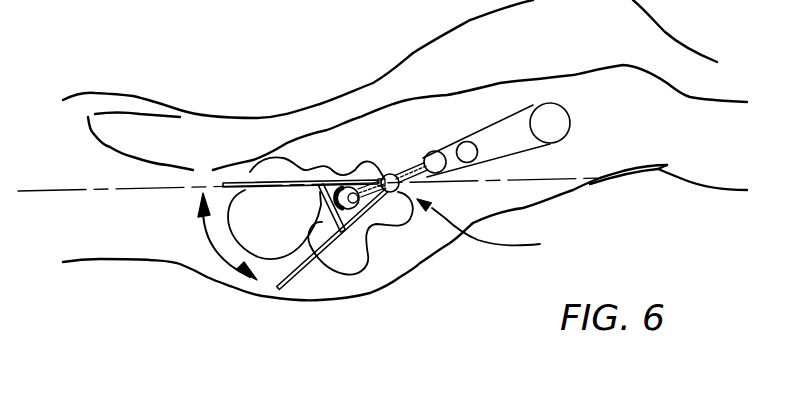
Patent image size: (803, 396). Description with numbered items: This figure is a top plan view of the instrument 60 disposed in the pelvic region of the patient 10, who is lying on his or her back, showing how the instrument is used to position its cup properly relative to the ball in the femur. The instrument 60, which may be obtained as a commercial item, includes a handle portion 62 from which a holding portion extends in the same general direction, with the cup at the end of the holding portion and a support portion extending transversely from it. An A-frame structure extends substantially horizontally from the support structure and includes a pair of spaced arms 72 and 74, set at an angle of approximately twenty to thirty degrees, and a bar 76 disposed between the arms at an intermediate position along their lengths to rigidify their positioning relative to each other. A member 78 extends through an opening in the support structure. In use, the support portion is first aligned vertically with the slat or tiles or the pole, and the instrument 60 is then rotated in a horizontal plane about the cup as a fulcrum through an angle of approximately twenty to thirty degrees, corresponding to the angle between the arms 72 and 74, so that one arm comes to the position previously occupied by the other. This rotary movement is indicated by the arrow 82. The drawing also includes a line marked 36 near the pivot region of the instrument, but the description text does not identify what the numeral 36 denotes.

The patient 10 is at (180, 140).
The tendon 36 is at (302, 173).
The instrument 60 is at (496, 229).
The handle portion 62 is at (512, 133).
The arm 72 is at (243, 187).
The arm 74 is at (298, 255).
The bar 76 is at (331, 230).
The member 78 is at (440, 160).
The arrow 82 is at (217, 240).